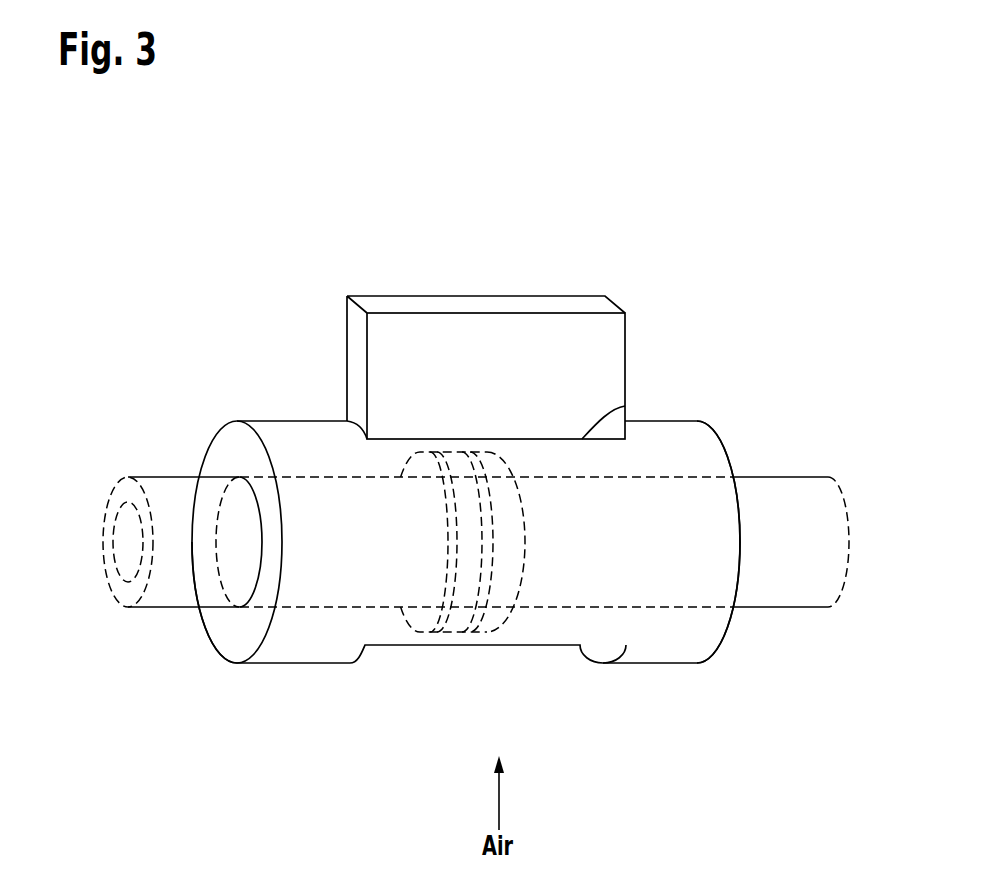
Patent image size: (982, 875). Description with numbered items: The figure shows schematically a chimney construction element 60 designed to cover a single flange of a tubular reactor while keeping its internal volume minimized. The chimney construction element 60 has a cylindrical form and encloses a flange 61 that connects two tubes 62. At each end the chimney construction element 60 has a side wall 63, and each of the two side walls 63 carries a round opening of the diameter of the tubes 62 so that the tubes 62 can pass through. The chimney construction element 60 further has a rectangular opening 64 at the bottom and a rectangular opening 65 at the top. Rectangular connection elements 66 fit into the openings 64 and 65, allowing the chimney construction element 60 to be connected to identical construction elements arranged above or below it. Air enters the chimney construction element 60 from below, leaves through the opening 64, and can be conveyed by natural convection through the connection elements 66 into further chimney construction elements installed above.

The chimney construction element 60 is at (688, 432).
The flange 61 is at (493, 633).
The tubes 62 is at (167, 477).
The side walls 63 is at (225, 635).
The rectangular opening at the bottom 64 is at (388, 647).
The rectangular opening at the top 65 is at (625, 406).
The rectangular connection elements 66 is at (530, 327).